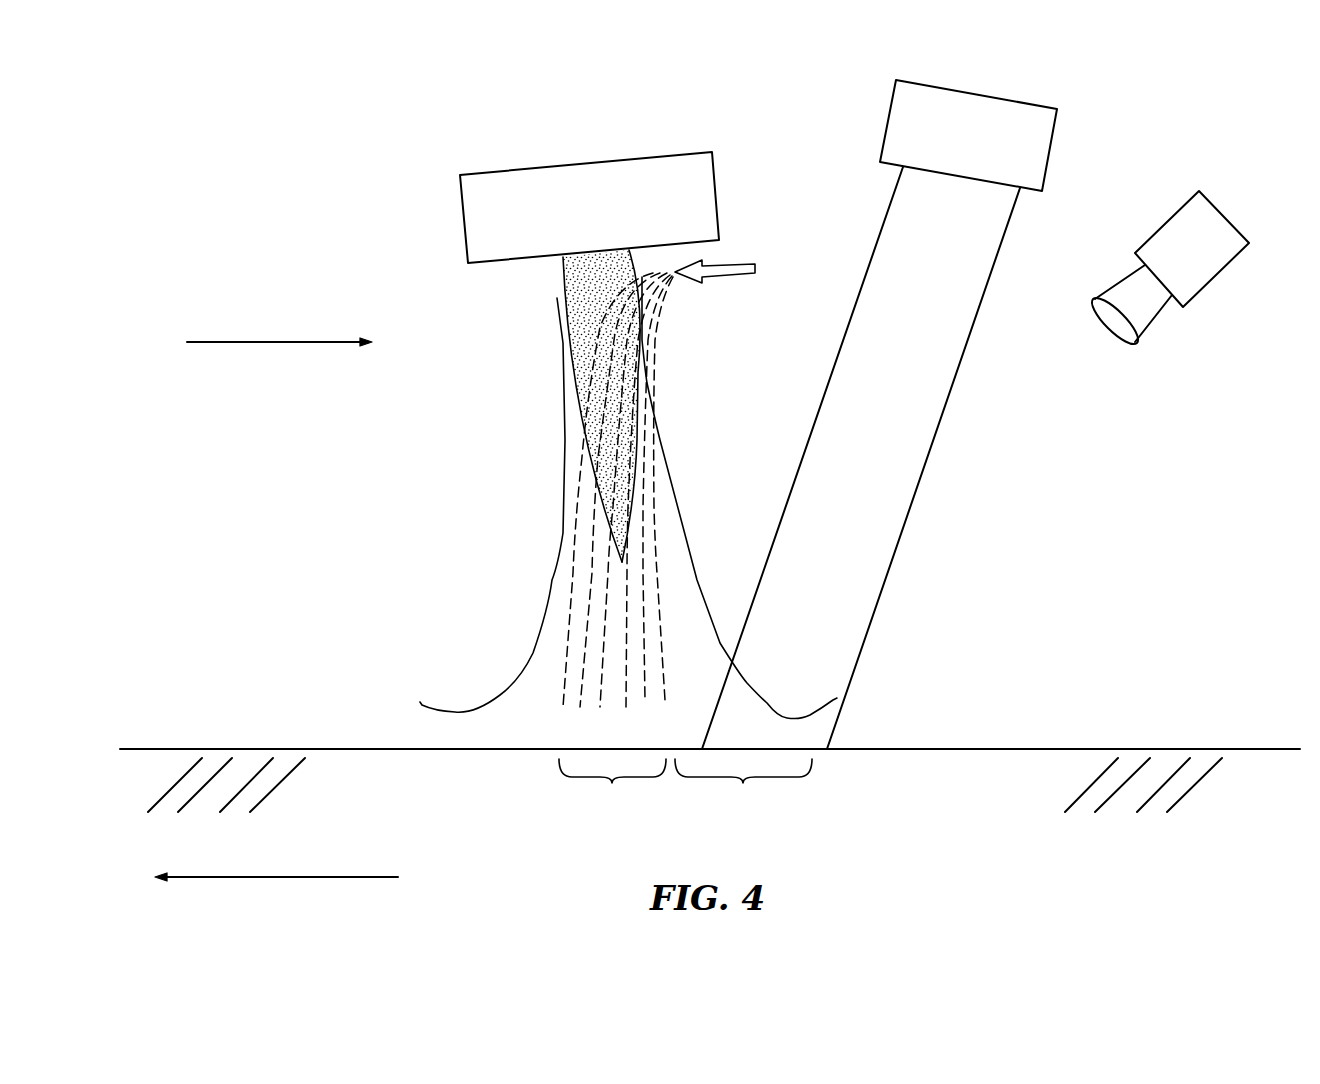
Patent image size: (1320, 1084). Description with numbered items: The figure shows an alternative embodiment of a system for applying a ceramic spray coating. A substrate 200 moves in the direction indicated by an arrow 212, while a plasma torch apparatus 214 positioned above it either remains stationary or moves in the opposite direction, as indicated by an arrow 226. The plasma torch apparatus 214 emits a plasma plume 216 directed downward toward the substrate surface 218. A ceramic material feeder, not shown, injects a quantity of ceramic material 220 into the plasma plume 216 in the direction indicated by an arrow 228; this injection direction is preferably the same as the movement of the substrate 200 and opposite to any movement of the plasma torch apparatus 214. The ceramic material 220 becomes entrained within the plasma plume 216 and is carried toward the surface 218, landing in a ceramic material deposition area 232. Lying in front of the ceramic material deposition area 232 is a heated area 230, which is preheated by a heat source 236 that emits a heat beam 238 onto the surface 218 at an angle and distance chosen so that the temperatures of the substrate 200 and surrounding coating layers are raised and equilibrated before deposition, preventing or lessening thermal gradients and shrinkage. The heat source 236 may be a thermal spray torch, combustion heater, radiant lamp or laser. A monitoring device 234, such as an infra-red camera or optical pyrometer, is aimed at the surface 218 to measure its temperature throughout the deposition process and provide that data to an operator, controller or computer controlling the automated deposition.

The substrate 200 is at (997, 832).
The arrow 212 is at (355, 877).
The plasma torch apparatus 214 is at (530, 167).
The plasma plume 216 is at (565, 339).
The surface 218 is at (977, 750).
The ceramic material 220 is at (663, 283).
The arrow 226 is at (262, 342).
The arrow 228 is at (755, 267).
The heated area 230 is at (743, 788).
The ceramic material deposition area 232 is at (612, 788).
The monitoring device 234 is at (1198, 270).
The heat source 236 is at (1037, 160).
The heat beam 238 is at (907, 500).